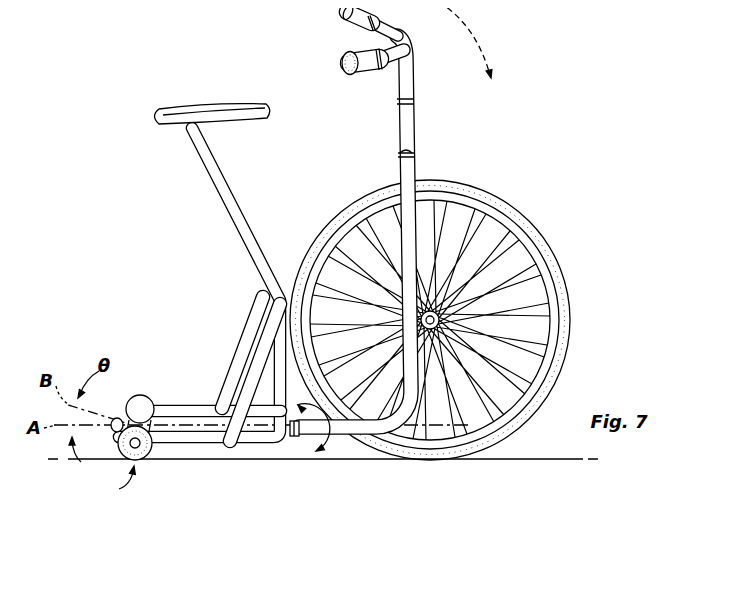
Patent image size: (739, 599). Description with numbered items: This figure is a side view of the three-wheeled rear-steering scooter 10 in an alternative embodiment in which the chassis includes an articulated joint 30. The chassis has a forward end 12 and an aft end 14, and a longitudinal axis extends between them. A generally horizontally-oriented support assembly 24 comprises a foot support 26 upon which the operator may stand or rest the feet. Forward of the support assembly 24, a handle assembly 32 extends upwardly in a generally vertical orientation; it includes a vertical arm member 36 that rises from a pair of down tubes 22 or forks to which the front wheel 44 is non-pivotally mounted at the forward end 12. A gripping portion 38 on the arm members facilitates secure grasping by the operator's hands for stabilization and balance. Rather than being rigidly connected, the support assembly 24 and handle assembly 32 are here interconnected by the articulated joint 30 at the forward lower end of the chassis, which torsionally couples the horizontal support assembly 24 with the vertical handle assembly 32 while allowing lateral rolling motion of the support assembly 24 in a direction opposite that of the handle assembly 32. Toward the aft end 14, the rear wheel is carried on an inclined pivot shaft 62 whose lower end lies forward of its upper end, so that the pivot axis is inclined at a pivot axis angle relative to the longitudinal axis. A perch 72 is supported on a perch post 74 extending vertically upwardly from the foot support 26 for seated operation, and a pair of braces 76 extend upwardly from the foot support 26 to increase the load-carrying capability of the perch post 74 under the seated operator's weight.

The scooter 10 is at (594, 85).
The forward end 12 is at (536, 470).
The aft end 14 is at (110, 484).
The down tubes 22 is at (441, 304).
The support assembly 24 is at (199, 313).
The foot support 26 is at (185, 441).
The articulated joint 30 is at (292, 437).
The handle assembly 32 is at (393, 446).
The vertical arm member 36 is at (386, 267).
The gripping portion 38 is at (352, 27).
The front wheel 44 is at (540, 238).
The pivot shaft 62 is at (122, 417).
The perch 72 is at (163, 107).
The perch post 74 is at (210, 167).
The braces 76 is at (243, 343).